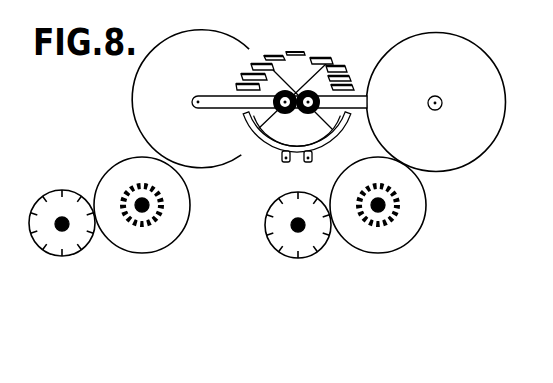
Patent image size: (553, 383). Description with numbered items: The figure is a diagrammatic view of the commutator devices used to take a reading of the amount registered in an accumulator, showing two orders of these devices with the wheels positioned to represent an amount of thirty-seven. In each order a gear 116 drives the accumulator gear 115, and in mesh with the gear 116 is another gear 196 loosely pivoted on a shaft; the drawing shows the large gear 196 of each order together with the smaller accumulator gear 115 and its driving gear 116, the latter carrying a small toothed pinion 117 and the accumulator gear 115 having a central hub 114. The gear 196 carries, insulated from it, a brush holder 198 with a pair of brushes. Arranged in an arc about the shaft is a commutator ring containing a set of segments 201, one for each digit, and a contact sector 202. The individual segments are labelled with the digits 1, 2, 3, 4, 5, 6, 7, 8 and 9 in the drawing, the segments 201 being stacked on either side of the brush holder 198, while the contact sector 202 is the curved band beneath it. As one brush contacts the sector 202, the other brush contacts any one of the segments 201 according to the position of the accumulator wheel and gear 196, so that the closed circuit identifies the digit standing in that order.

The contact plate 1 is at (346, 85).
The contact plate 2 is at (343, 76).
The contact plate 3 is at (339, 65).
The contact plate 4 is at (321, 56).
The contact plate 5 is at (294, 49).
The contact plate 6 is at (272, 54).
The contact plate 7 is at (260, 64).
The contact plate 8 is at (251, 74).
The contact plate 9 is at (245, 84).
The hub 114 is at (57, 218).
The accumulator gear 115 is at (68, 191).
The gear 116 is at (109, 180).
The pinion 117 is at (136, 194).
The gear 196 is at (128, 111).
The brush holder 198 is at (322, 71).
The segments 201 is at (340, 64).
The contact sector 202 is at (265, 150).